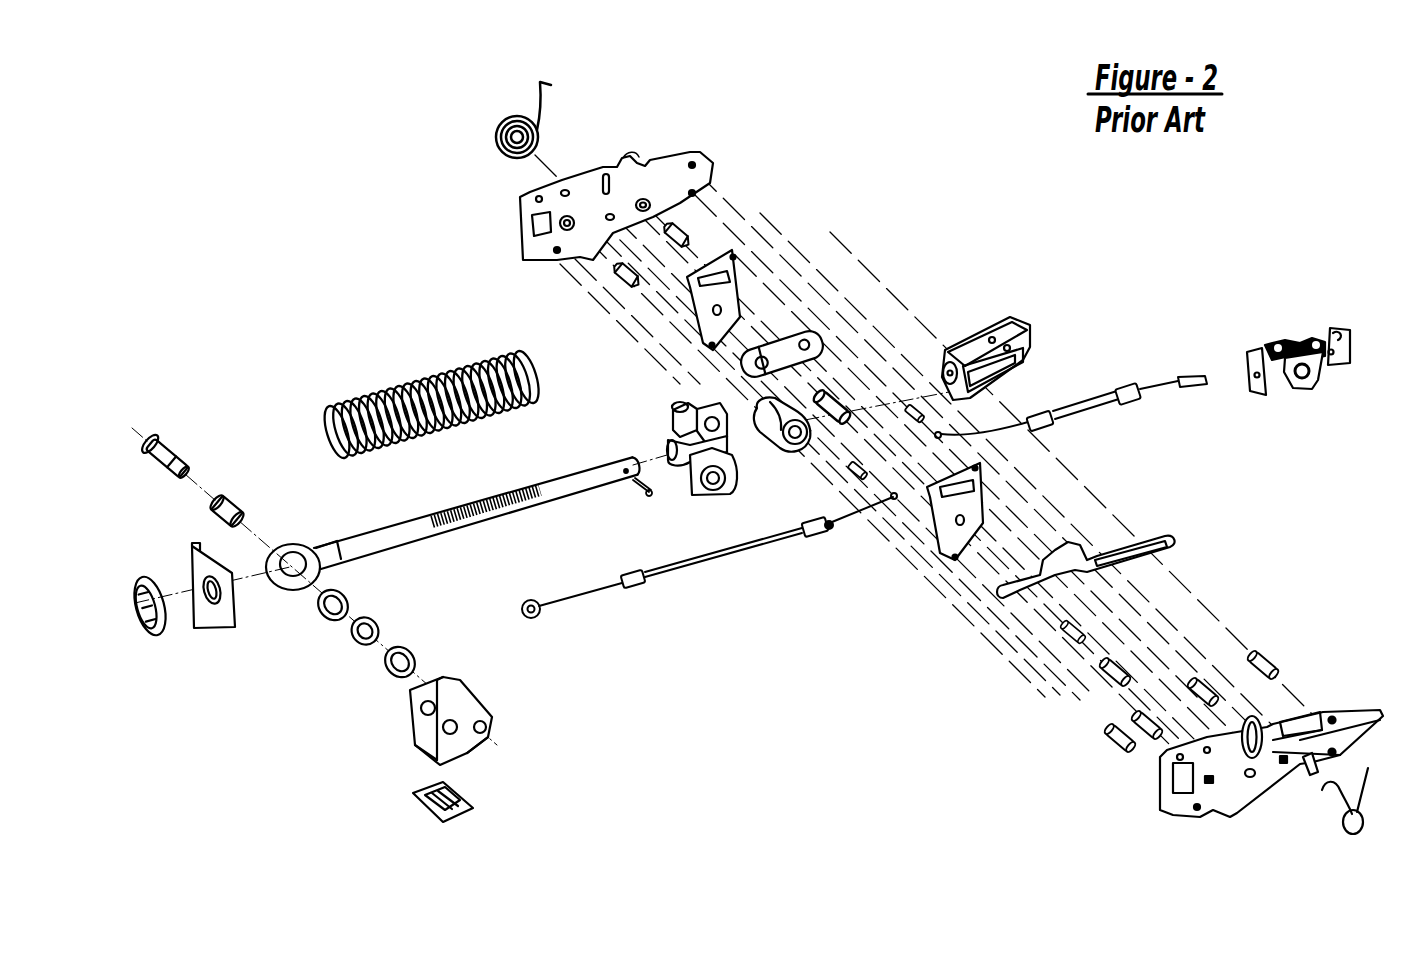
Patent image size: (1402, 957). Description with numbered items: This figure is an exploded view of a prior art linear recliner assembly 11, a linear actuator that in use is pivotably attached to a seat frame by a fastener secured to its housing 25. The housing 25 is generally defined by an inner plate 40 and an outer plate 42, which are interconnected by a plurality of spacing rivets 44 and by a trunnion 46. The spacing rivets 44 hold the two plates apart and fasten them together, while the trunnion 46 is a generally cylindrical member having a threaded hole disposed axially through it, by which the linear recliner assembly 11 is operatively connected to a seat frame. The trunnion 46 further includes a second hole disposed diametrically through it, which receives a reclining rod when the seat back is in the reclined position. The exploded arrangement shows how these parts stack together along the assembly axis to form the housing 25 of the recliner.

The linear recliner assembly 11 is at (869, 130).
The housing 25 is at (517, 223).
The inner plate 40 is at (700, 152).
The outer plate 42 is at (1360, 708).
The spacing rivets 44 is at (1200, 684).
The trunnion 46 is at (794, 412).